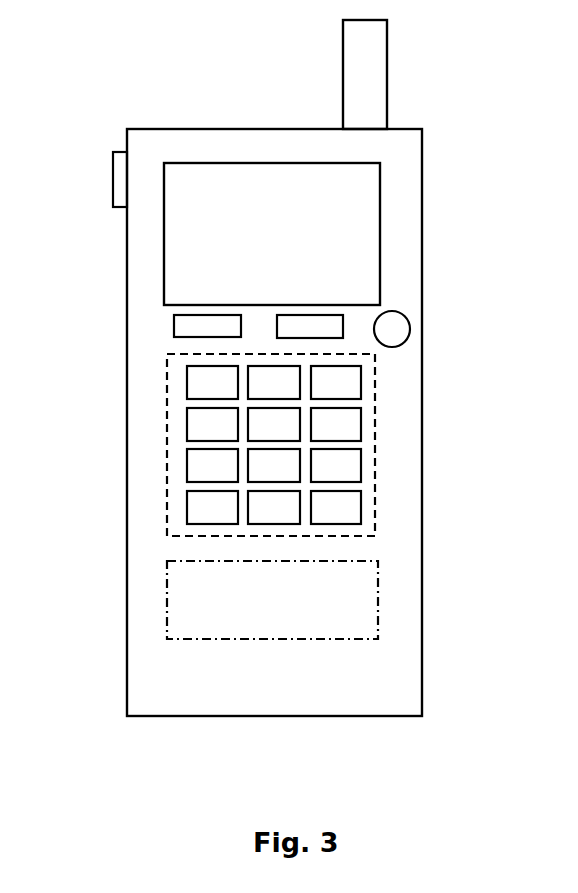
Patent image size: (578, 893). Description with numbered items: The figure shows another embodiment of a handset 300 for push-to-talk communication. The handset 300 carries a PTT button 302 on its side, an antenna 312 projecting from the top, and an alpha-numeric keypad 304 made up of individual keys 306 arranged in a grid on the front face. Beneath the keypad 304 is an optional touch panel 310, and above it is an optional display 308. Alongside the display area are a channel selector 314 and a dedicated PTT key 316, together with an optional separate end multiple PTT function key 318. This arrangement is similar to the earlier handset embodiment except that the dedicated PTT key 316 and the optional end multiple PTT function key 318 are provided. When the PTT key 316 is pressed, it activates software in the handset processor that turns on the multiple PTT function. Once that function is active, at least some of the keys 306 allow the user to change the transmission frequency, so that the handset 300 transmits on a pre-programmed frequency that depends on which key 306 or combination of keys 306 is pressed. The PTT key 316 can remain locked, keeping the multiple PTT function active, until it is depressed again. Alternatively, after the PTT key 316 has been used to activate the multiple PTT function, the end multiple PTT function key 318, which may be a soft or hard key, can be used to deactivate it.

The handset 300 is at (287, 368).
The PTT button 302 is at (113, 185).
The alpha-numeric keypad 304 is at (375, 400).
The keys 306 is at (187, 510).
The display 308 is at (380, 223).
The touch panel 310 is at (378, 590).
The antenna 312 is at (387, 88).
The channel selector 314 is at (410, 323).
The PTT key 316 is at (174, 325).
The end multiple PTT function key 318 is at (302, 315).